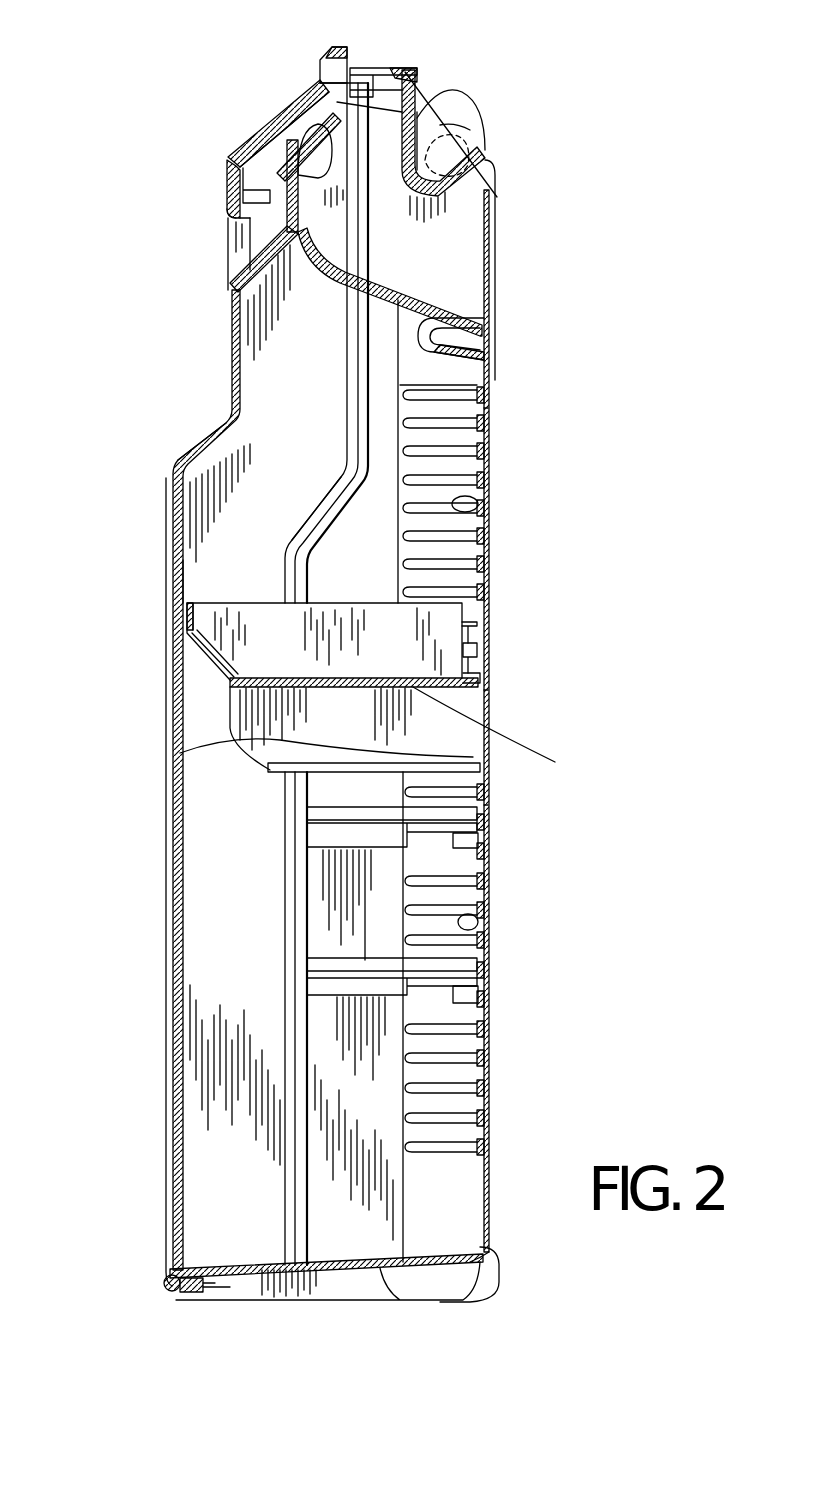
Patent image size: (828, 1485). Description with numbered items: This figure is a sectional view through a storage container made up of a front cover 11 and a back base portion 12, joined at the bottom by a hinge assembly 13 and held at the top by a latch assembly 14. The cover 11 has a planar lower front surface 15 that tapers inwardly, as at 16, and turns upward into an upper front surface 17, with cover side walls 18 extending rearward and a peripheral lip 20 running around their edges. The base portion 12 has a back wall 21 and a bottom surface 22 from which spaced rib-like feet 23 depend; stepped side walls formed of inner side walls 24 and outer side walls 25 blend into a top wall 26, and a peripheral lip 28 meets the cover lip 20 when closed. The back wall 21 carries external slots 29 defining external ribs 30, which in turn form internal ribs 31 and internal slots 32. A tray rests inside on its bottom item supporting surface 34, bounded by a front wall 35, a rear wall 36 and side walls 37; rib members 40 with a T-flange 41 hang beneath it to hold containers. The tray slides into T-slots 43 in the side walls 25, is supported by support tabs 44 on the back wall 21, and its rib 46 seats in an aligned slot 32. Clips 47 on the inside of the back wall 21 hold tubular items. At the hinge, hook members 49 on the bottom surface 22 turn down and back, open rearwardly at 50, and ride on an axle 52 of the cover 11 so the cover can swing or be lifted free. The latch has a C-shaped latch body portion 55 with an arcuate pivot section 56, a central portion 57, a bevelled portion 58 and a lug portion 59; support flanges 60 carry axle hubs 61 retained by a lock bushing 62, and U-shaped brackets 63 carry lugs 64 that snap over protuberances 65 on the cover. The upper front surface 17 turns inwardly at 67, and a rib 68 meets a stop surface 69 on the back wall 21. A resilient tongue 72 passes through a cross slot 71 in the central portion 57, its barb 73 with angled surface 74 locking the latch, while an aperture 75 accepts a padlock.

The front cover 11 is at (165, 912).
The back base portion 12 is at (490, 541).
The hinge assembly 13 is at (162, 1288).
The latch assembly 14 is at (395, 55).
The lower front surface 15 is at (172, 1040).
The taper 16 is at (207, 440).
The upper front surface 17 is at (228, 332).
The cover side walls 18 is at (203, 573).
The peripheral lip 20 is at (350, 383).
The back wall 21 is at (483, 358).
The bottom surface 22 is at (397, 1298).
The feet 23 is at (440, 1282).
The inner side walls 24 is at (447, 376).
The outer side walls 25 is at (370, 532).
The top wall 26 is at (480, 108).
The peripheral lip 28 is at (367, 474).
The external slots 29 is at (487, 581).
The external ribs 30 is at (487, 400).
The internal ribs 31 is at (283, 556).
The internal slots 32 is at (488, 490).
The bottom item supporting surface 34 is at (498, 732).
The front wall 35 is at (203, 663).
The rear wall 36 is at (487, 654).
The side walls 37 is at (490, 633).
The rib members 40 is at (238, 718).
The T-flange 41 is at (280, 772).
The T-slots 43 is at (490, 870).
The support tabs 44 is at (487, 722).
The rib 46 is at (490, 681).
The clips 47 is at (467, 338).
The hook members 49 is at (178, 1292).
The opening 50 is at (203, 1282).
The axle 52 is at (166, 1278).
The latch body portion 55 is at (422, 77).
The arcuate pivot section 56 is at (490, 197).
The central portion 57 is at (425, 70).
The bevelled portion 58 is at (260, 137).
The lug portion 59 is at (230, 208).
The support flanges 60 is at (447, 127).
The axle hubs 61 is at (470, 150).
The lock bushing 62 is at (425, 134).
The U-shaped brackets 63 is at (262, 200).
The lug 64 is at (263, 167).
The protuberances 65 is at (277, 135).
The inwardly turned surface 67 is at (228, 266).
The rib 68 is at (287, 140).
The stop surface 69 is at (307, 197).
The cross slot 71 is at (373, 67).
The resilient tongue 72 is at (473, 110).
The barb 73 is at (352, 62).
The angled surface 74 is at (327, 47).
The aperture 75 is at (325, 62).